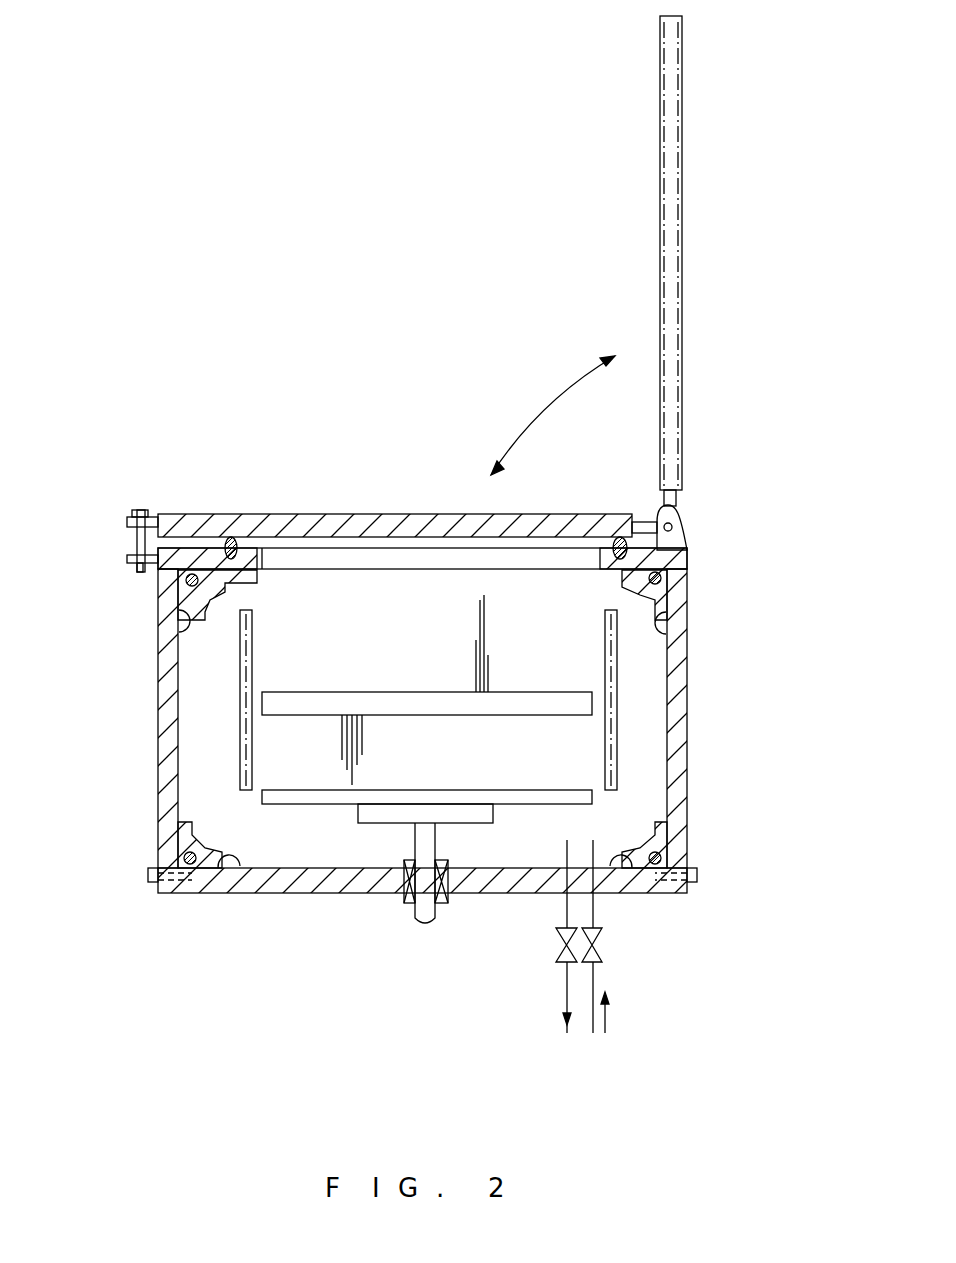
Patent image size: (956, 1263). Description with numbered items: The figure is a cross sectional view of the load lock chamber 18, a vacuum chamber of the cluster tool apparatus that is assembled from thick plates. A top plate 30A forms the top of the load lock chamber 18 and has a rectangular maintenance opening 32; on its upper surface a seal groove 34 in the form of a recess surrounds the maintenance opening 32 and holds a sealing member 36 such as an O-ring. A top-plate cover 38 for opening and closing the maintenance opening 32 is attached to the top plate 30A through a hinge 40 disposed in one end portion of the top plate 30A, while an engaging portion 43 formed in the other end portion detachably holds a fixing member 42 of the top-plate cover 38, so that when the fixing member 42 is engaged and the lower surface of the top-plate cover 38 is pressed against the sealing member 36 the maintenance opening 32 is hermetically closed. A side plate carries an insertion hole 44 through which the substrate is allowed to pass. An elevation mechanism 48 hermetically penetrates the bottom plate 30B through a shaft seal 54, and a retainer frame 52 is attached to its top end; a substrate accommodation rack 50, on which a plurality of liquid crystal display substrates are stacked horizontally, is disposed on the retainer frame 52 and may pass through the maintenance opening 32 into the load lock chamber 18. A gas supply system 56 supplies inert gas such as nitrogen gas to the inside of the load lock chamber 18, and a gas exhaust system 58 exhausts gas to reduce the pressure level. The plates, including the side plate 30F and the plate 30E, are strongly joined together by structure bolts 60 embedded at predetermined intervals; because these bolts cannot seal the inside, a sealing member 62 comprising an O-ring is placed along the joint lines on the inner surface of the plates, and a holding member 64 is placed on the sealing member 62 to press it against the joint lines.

The load lock chamber 18 is at (290, 443).
The top plate 30A is at (684, 558).
The bottom plate 30B is at (312, 893).
The plate 30E is at (688, 735).
The side plate 30F is at (158, 703).
The maintenance opening 32 is at (418, 582).
The seal groove 34 is at (240, 572).
The sealing member 36 is at (230, 538).
The top-plate cover 38 is at (683, 170).
The hinge 40 is at (683, 520).
The fixing member 42 is at (132, 543).
The engaging portion 43 is at (130, 562).
The insertion hole 44 is at (521, 692).
The elevation mechanism 48 is at (423, 910).
The substrate accommodation rack 50 is at (240, 751).
The retainer frame 52 is at (593, 806).
The shaft seal 54 is at (438, 907).
The gas supply system 56 is at (594, 975).
The gas exhaust system 58 is at (565, 988).
The structure bolts 60 is at (698, 880).
The sealing member 62 is at (178, 576).
The holding member 64 is at (180, 622).